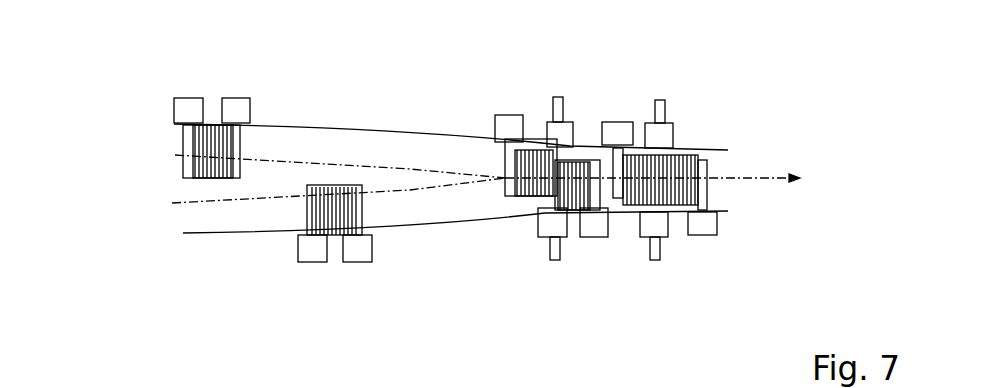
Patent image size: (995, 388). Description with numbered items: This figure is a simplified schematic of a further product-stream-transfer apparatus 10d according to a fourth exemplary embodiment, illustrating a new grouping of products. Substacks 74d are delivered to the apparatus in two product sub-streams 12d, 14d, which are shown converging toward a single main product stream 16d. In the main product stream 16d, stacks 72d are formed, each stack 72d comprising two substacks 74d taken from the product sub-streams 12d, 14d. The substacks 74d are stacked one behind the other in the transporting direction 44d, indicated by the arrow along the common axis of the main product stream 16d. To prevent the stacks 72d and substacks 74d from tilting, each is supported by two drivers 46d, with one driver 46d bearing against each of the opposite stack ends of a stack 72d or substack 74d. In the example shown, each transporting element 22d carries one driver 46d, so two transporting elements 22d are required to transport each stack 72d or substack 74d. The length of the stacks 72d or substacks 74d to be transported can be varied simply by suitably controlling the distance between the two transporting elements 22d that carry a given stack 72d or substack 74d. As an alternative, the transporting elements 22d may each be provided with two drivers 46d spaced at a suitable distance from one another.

The product-stream-transfer apparatus 10d is at (148, 226).
The product sub-stream 12d is at (383, 164).
The product sub-stream 14d is at (413, 189).
The main product stream 16d is at (718, 181).
The transporting element 22d is at (590, 228).
The transporting direction 44d is at (770, 176).
The driver 46d is at (238, 178).
The stack 72d is at (675, 205).
The substack 74d is at (330, 185).